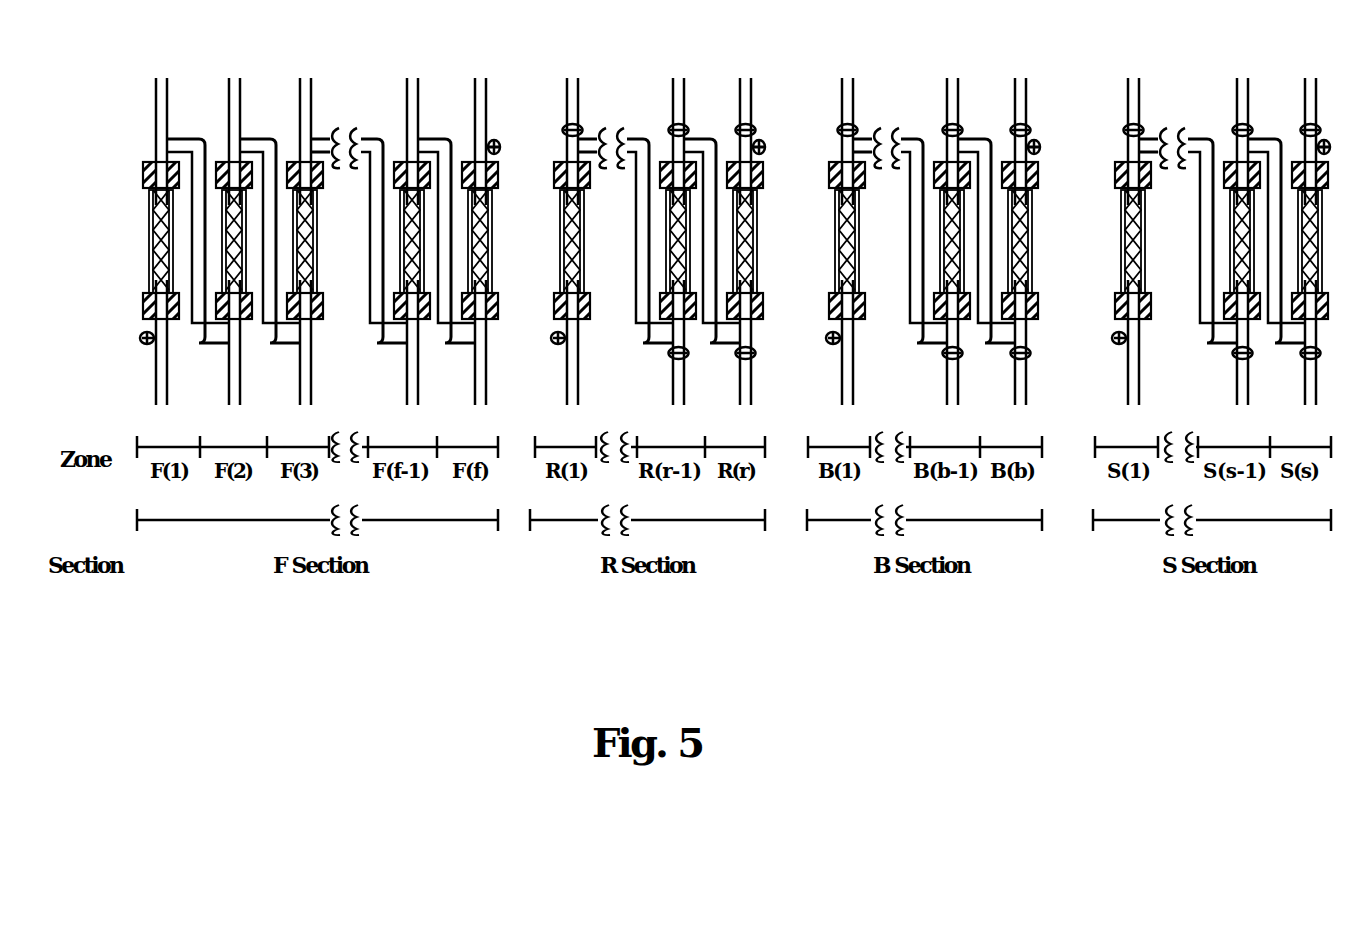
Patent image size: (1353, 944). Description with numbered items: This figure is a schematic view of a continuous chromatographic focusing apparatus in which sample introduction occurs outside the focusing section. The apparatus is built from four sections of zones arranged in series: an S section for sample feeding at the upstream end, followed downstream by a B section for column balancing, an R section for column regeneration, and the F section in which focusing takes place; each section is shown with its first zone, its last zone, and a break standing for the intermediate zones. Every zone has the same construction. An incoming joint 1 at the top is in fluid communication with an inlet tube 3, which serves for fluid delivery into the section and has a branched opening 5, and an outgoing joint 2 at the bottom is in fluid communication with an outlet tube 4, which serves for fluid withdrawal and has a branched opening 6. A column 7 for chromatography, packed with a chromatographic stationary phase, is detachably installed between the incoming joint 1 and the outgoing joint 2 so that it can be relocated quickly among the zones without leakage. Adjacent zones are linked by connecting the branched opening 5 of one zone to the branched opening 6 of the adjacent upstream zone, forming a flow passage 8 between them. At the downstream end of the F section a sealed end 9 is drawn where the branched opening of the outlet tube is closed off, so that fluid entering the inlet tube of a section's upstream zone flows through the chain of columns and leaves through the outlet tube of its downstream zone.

The incoming joint 1 is at (117, 176).
The outgoing joint 2 is at (117, 300).
The inlet tube 3 is at (111, 138).
The outlet tube 4 is at (111, 343).
The branched opening 5 is at (198, 192).
The branched opening 6 is at (104, 335).
The column 7 is at (114, 241).
The flow passage 8 is at (198, 198).
The fitting stub 9 is at (119, 362).